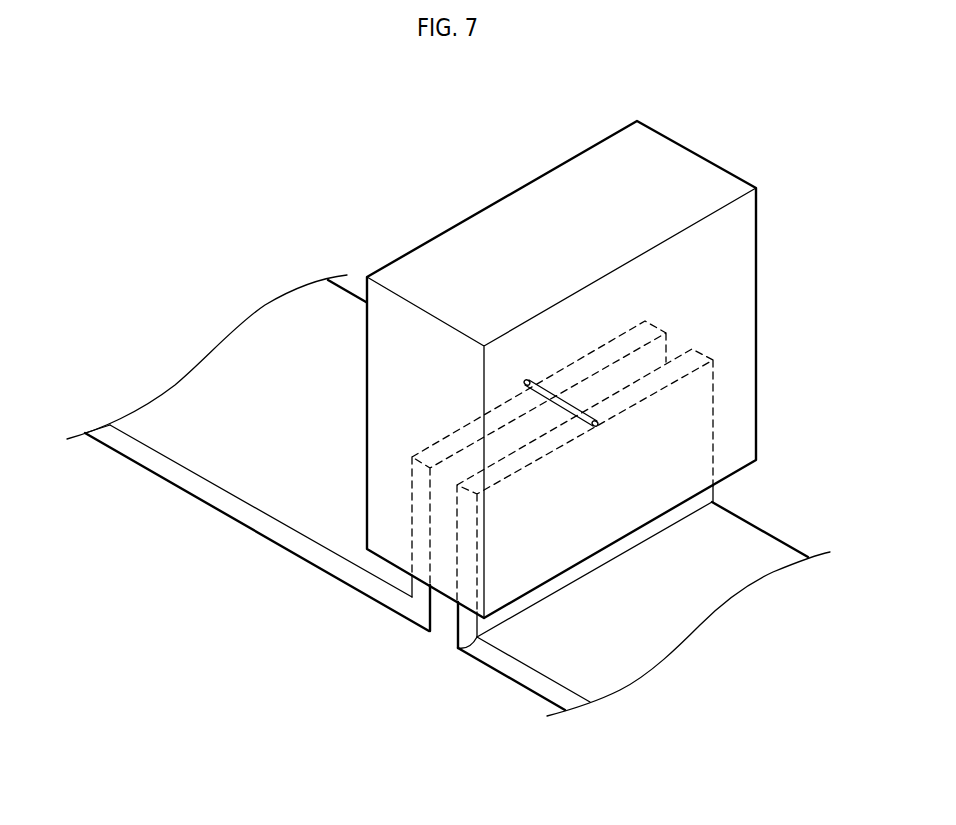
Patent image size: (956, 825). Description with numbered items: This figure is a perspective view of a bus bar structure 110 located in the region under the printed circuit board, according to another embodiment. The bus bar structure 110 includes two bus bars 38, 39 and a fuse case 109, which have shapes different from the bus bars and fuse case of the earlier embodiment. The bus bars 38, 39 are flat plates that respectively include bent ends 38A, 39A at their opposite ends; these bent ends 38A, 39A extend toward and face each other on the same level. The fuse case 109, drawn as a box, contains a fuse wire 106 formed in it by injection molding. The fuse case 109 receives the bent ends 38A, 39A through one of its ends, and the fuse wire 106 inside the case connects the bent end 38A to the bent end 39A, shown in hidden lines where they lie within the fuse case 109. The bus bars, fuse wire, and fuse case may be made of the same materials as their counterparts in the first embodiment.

The bus bar structure 110 is at (327, 101).
The fuse case 109 is at (670, 153).
The fuse wire 106 is at (560, 407).
The bus bar 39 is at (287, 538).
The bent end 39A is at (405, 588).
The bus bar 38 is at (538, 687).
The bent end 38A is at (459, 650).